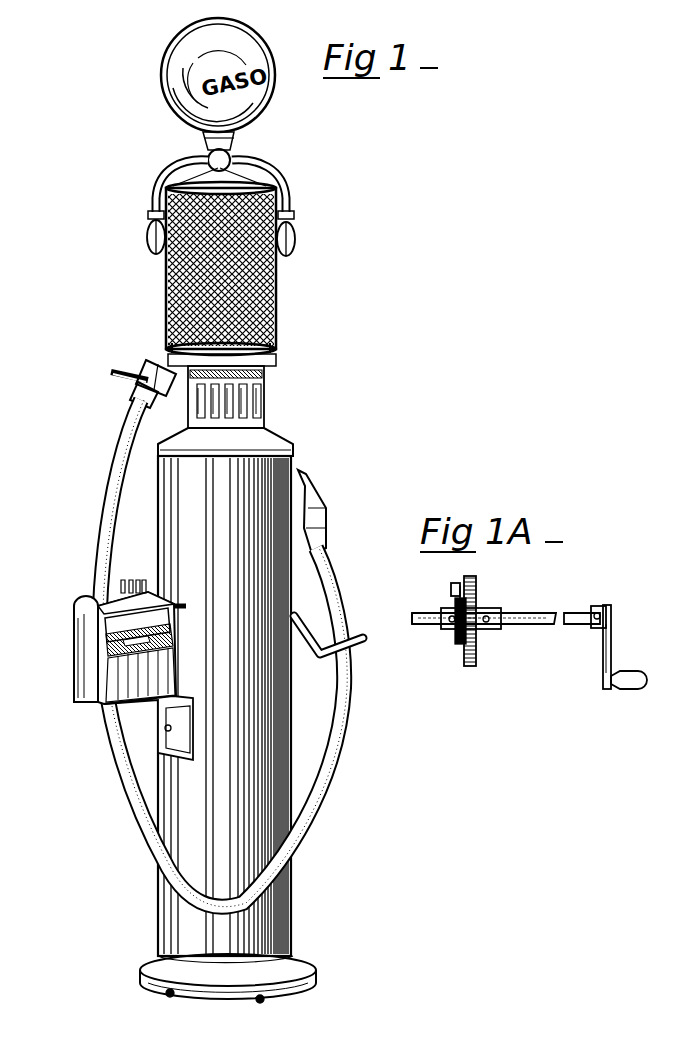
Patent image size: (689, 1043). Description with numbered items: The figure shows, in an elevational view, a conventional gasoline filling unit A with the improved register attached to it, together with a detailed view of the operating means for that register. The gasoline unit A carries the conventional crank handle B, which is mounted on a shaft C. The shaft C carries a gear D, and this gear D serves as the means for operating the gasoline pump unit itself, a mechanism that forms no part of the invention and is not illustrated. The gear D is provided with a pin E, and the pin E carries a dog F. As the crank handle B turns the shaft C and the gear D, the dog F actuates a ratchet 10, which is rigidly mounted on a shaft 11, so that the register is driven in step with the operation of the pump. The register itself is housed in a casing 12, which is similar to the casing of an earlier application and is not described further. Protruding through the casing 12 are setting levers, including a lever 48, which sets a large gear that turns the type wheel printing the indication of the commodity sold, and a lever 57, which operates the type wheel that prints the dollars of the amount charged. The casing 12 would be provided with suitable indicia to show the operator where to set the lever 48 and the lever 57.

In FIG. 1, the gasoline unit A is at (245, 481).
In FIG. 1, the crank handle B is at (292, 611).
In FIG. 1A, the crank handle B is at (603, 637).
In FIG. 1A, the shaft C is at (521, 610).
In FIG. 1A, the gear D is at (468, 586).
In FIG. 1A, the pin E is at (442, 581).
In FIG. 1A, the dog F is at (452, 578).
In FIG. 1A, the ratchet 10 is at (450, 628).
In FIG. 1, the shaft 11 is at (148, 571).
In FIG. 1A, the shaft 11 is at (418, 616).
In FIG. 1, the casing 12 is at (72, 617).
In FIG. 1, the lever 48 is at (125, 571).
In FIG. 1, the lever 57 is at (114, 571).